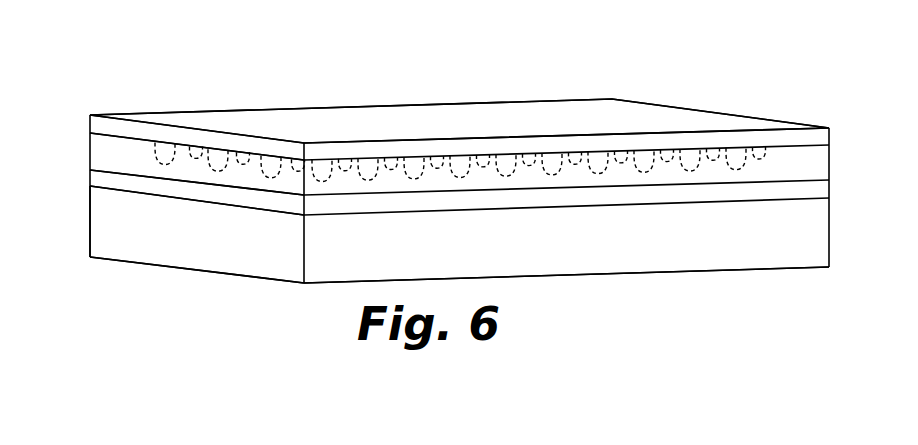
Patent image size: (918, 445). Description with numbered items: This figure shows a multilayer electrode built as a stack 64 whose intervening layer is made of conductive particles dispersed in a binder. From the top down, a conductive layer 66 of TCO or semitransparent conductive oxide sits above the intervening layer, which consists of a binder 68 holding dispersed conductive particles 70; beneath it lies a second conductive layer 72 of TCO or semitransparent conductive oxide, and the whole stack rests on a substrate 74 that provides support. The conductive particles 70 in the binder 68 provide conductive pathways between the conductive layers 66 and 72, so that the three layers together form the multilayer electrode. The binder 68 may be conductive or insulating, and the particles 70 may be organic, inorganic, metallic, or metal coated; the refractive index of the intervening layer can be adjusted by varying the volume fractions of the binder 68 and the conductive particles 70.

The stack 64 is at (281, 72).
The conductive layer 66 is at (90, 131).
The binder 68 is at (100, 153).
The conductive particles 70 is at (155, 164).
The conductive layer 72 is at (100, 180).
The substrate 74 is at (100, 227).